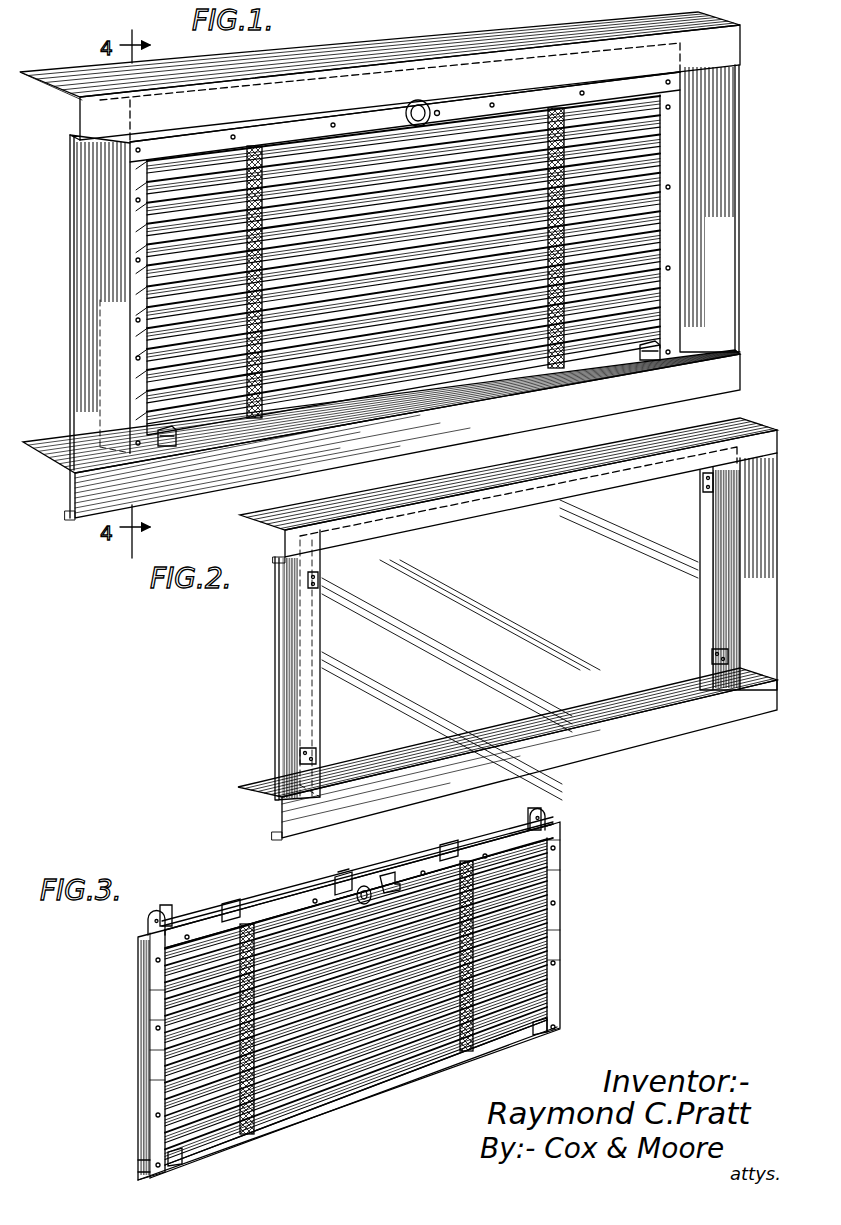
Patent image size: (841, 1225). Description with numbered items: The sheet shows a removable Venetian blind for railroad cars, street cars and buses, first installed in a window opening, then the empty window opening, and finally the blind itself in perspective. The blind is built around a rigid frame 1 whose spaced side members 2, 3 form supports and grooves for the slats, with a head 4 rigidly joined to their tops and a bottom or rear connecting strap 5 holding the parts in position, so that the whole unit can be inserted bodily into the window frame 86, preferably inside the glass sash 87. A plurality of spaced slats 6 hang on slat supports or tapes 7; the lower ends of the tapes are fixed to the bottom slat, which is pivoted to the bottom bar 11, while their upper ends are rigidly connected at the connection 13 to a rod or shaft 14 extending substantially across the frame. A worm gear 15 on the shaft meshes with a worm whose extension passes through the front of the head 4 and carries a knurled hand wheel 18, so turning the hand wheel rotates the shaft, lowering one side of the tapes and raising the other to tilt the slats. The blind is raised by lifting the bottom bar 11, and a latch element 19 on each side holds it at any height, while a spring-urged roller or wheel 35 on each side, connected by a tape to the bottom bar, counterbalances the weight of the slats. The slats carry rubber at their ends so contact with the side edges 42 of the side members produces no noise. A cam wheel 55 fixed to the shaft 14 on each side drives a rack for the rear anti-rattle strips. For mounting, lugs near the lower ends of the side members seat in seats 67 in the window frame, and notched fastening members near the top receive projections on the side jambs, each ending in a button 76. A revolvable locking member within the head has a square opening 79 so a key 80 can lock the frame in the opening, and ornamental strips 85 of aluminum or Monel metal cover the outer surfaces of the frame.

In FIG. 1, the rigid frame 1 is at (668, 118).
In FIG. 3, the rigid frame 1 is at (566, 914).
In FIG. 1, the side member 2 is at (682, 282).
In FIG. 3, the side member 2 is at (557, 878).
In FIG. 1, the side member 3 is at (134, 294).
In FIG. 3, the side member 3 is at (147, 1025).
In FIG. 1, the head 4 is at (307, 123).
In FIG. 3, the head 4 is at (188, 926).
In FIG. 3, the bottom connecting strap 5 is at (140, 1163).
In FIG. 1, the slats 6 is at (208, 164).
In FIG. 3, the slats 6 is at (163, 977).
In FIG. 1, the slat supports or tapes 7 is at (254, 150).
In FIG. 3, the slat supports or tapes 7 is at (250, 928).
In FIG. 3, the bottom bar 11 is at (304, 1116).
In FIG. 3, the tape connection 13 is at (232, 903).
In FIG. 3, the rod or shaft 14 is at (307, 890).
In FIG. 3, the worm gear 15 is at (347, 877).
In FIG. 1, the knurled hand wheel 18 is at (421, 100).
In FIG. 3, the knurled hand wheel 18 is at (369, 883).
In FIG. 1, the latch element 19 is at (163, 445).
In FIG. 3, the latch element 19 is at (184, 1160).
In FIG. 3, the roller or wheel 35 is at (147, 923).
In FIG. 3, the side edges 42 is at (163, 1063).
In FIG. 3, the cam wheel 55 is at (170, 918).
In FIG. 2, the seats 67 is at (314, 754).
In FIG. 2, the button 76 is at (320, 582).
In FIG. 1, the square opening 79 is at (438, 112).
In FIG. 3, the key 80 is at (390, 878).
In FIG. 3, the ornamental strips 85 is at (157, 1005).
In FIG. 2, the window frame 86 is at (508, 490).
In FIG. 2, the glass sash 87 is at (328, 647).